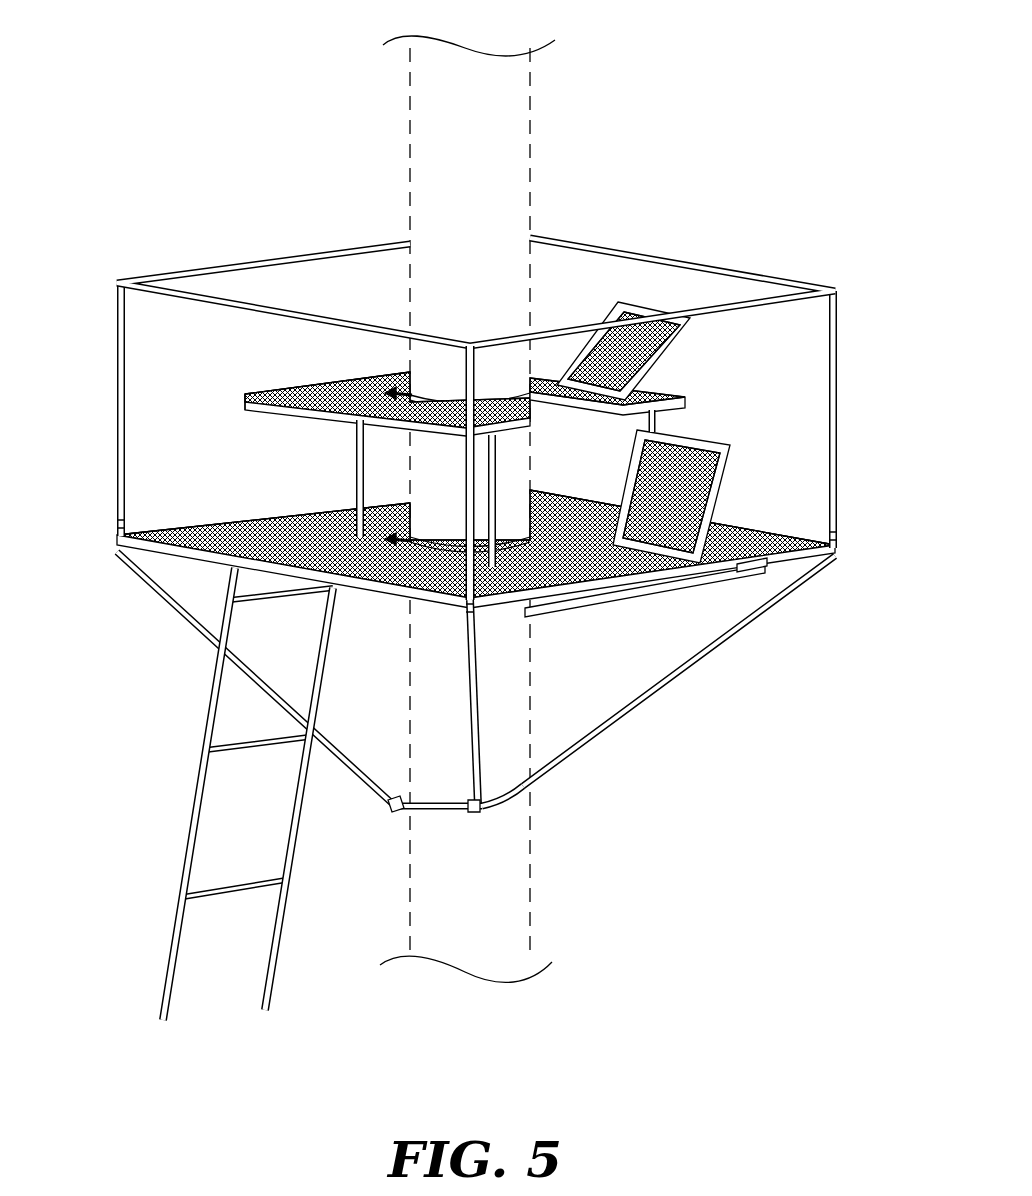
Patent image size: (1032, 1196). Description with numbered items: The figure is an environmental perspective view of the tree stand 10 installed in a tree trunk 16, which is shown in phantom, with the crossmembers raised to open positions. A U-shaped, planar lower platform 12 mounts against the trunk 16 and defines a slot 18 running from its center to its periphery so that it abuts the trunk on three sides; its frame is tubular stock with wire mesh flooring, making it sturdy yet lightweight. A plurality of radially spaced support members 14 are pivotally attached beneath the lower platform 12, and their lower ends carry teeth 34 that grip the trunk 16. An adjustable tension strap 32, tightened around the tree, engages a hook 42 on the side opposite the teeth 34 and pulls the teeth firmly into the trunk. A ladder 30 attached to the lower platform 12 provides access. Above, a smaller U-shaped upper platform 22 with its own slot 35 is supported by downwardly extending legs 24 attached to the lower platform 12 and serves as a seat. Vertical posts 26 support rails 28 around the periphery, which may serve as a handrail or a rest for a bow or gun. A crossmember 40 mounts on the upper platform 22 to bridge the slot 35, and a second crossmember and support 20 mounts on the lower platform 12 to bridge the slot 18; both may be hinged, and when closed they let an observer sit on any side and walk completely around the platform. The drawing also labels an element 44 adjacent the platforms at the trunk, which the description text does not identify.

The tree stand 10 is at (803, 68).
The lower platform 12 is at (207, 523).
The support members 14 is at (162, 596).
The tree trunk 16 is at (528, 897).
The slot 18 is at (640, 572).
The second crossmember and support 20 is at (722, 472).
The upper platform 22 is at (290, 388).
The legs 24 is at (355, 457).
The vertical posts 26 is at (117, 345).
The rails 28 is at (698, 265).
The ladder 30 is at (195, 775).
The adjustable tension strap 32 is at (520, 392).
The teeth 34 is at (465, 780).
The slot 35 is at (558, 418).
The crossmember 40 is at (670, 330).
The hook 42 is at (388, 810).
The hook 44 is at (398, 390).